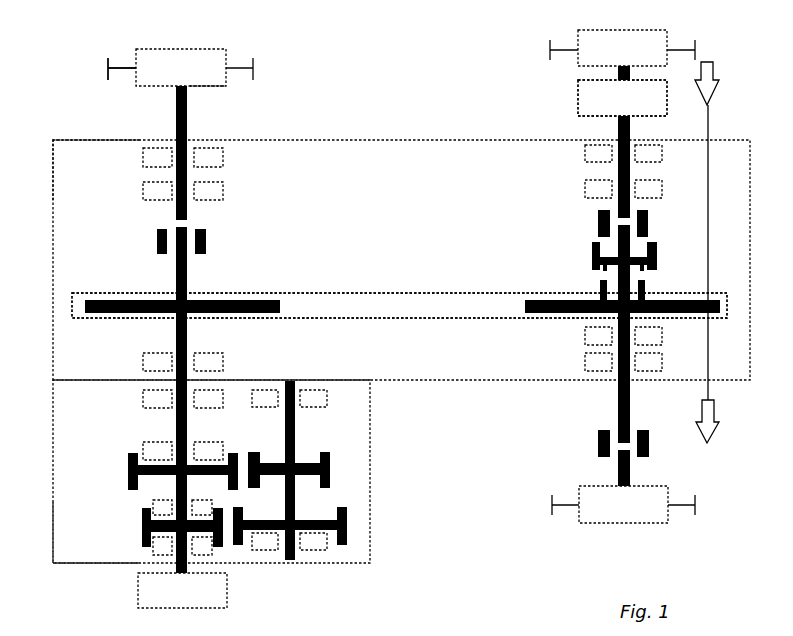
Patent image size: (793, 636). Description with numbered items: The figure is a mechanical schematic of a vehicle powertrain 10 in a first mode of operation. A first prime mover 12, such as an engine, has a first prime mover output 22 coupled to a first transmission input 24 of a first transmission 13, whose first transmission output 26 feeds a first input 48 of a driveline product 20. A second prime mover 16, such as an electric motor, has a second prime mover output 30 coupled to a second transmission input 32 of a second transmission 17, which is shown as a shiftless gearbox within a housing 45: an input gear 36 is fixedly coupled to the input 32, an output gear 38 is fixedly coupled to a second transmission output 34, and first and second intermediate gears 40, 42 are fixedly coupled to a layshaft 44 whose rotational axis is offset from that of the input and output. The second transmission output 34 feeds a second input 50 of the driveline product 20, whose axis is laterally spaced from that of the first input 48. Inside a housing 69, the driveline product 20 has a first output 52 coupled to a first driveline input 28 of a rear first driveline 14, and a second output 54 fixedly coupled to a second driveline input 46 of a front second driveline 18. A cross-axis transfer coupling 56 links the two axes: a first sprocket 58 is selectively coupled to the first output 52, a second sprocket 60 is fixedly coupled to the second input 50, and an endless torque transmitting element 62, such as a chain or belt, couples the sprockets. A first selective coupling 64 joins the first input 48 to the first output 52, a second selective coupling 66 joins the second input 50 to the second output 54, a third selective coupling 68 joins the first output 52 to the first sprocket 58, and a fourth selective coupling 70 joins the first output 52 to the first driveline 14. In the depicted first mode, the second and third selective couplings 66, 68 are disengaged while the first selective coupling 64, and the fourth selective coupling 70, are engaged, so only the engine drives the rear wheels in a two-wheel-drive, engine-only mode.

The vehicle powertrain 10 is at (100, 48).
The first prime mover 12 is at (612, 32).
The first transmission 13 is at (578, 98).
The first driveline 14 is at (612, 523).
The second prime mover 16 is at (190, 610).
The second transmission 17 is at (53, 502).
The second driveline 18 is at (150, 86).
The driveline product 20 is at (53, 200).
The first prime mover output 22 is at (618, 70).
The first transmission input 24 is at (633, 78).
The first transmission output 26 is at (618, 125).
The first driveline input 28 is at (618, 473).
The second prime mover output 30 is at (170, 567).
The second transmission input 32 is at (185, 570).
The second transmission output 34 is at (176, 375).
The input gear 36 is at (142, 528).
The output gear 38 is at (128, 475).
The first intermediate gear 40 is at (350, 522).
The second intermediate gear 42 is at (332, 468).
The layshaft 44 is at (296, 430).
The housing 45 is at (53, 400).
The second driveline input 46 is at (190, 87).
The first input 48 is at (630, 137).
The second input 50 is at (197, 382).
The first output 52 is at (618, 380).
The second output 54 is at (188, 130).
The transfer coupling 56 is at (548, 328).
The first sprocket 58 is at (568, 318).
The second sprocket 60 is at (265, 293).
The endless torque transmitting element 62 is at (393, 293).
The first selective coupling 64 is at (592, 222).
The second selective coupling 66 is at (157, 240).
The third selective coupling 68 is at (560, 256).
The housing 69 is at (53, 248).
The fourth selective coupling 70 is at (652, 452).